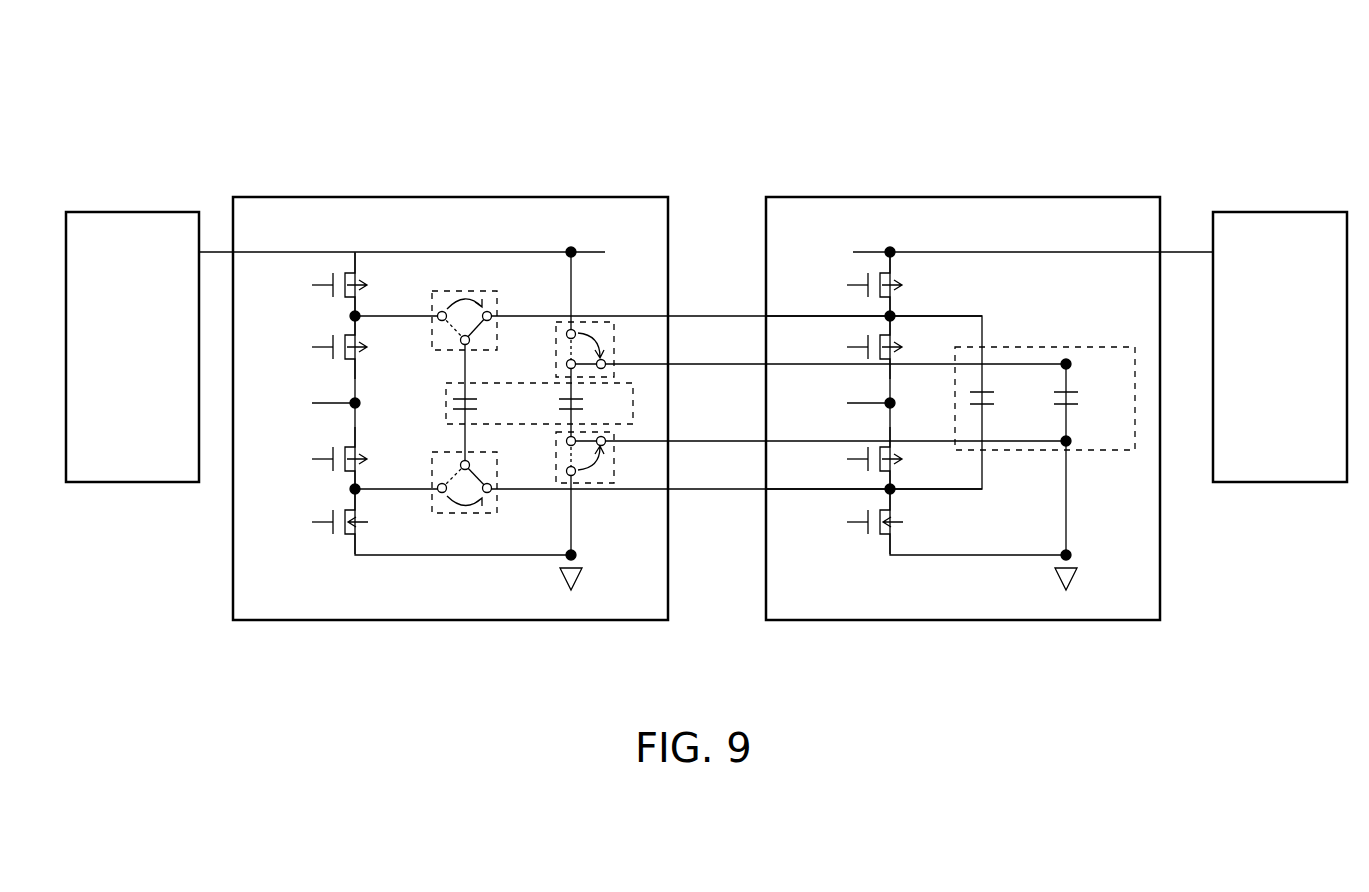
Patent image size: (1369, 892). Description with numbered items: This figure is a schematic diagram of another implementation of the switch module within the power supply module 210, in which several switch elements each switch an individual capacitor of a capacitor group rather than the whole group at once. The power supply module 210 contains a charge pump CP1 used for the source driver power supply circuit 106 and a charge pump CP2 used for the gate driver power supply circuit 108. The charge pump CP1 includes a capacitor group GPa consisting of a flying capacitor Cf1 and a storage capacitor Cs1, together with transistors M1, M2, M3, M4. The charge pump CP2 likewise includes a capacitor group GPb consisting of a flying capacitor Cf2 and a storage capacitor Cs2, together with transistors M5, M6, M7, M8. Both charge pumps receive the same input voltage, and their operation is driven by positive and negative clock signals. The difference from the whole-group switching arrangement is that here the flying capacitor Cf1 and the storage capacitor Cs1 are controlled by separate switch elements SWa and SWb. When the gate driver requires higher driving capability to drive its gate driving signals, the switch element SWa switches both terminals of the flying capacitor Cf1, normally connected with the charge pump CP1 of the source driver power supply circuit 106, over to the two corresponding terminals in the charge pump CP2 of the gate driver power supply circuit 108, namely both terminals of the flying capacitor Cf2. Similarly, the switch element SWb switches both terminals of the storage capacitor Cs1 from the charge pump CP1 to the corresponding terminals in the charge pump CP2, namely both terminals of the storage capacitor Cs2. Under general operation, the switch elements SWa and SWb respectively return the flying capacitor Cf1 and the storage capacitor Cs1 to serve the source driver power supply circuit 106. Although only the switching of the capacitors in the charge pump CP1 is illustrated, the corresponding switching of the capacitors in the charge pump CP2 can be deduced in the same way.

The power supply module 210 is at (1163, 80).
The source driver power supply circuit 106 is at (131, 212).
The gate driver power supply circuit 108 is at (1279, 212).
The charge pump CP1 is at (455, 197).
The charge pump CP2 is at (962, 197).
The transistor M1 is at (356, 285).
The transistor M2 is at (356, 347).
The transistor M3 is at (356, 459).
The transistor M4 is at (356, 522).
The transistor M5 is at (891, 285).
The transistor M6 is at (891, 347).
The transistor M7 is at (891, 459).
The transistor M8 is at (891, 522).
The switch element SWa is at (436, 355).
The switch element SWb is at (615, 350).
The capacitor group GPa is at (520, 383).
The capacitor group GPb is at (1026, 347).
The flying capacitor Cf1 is at (485, 405).
The storage capacitor Cs1 is at (592, 405).
The flying capacitor Cf2 is at (1001, 404).
The storage capacitor Cs2 is at (1086, 404).